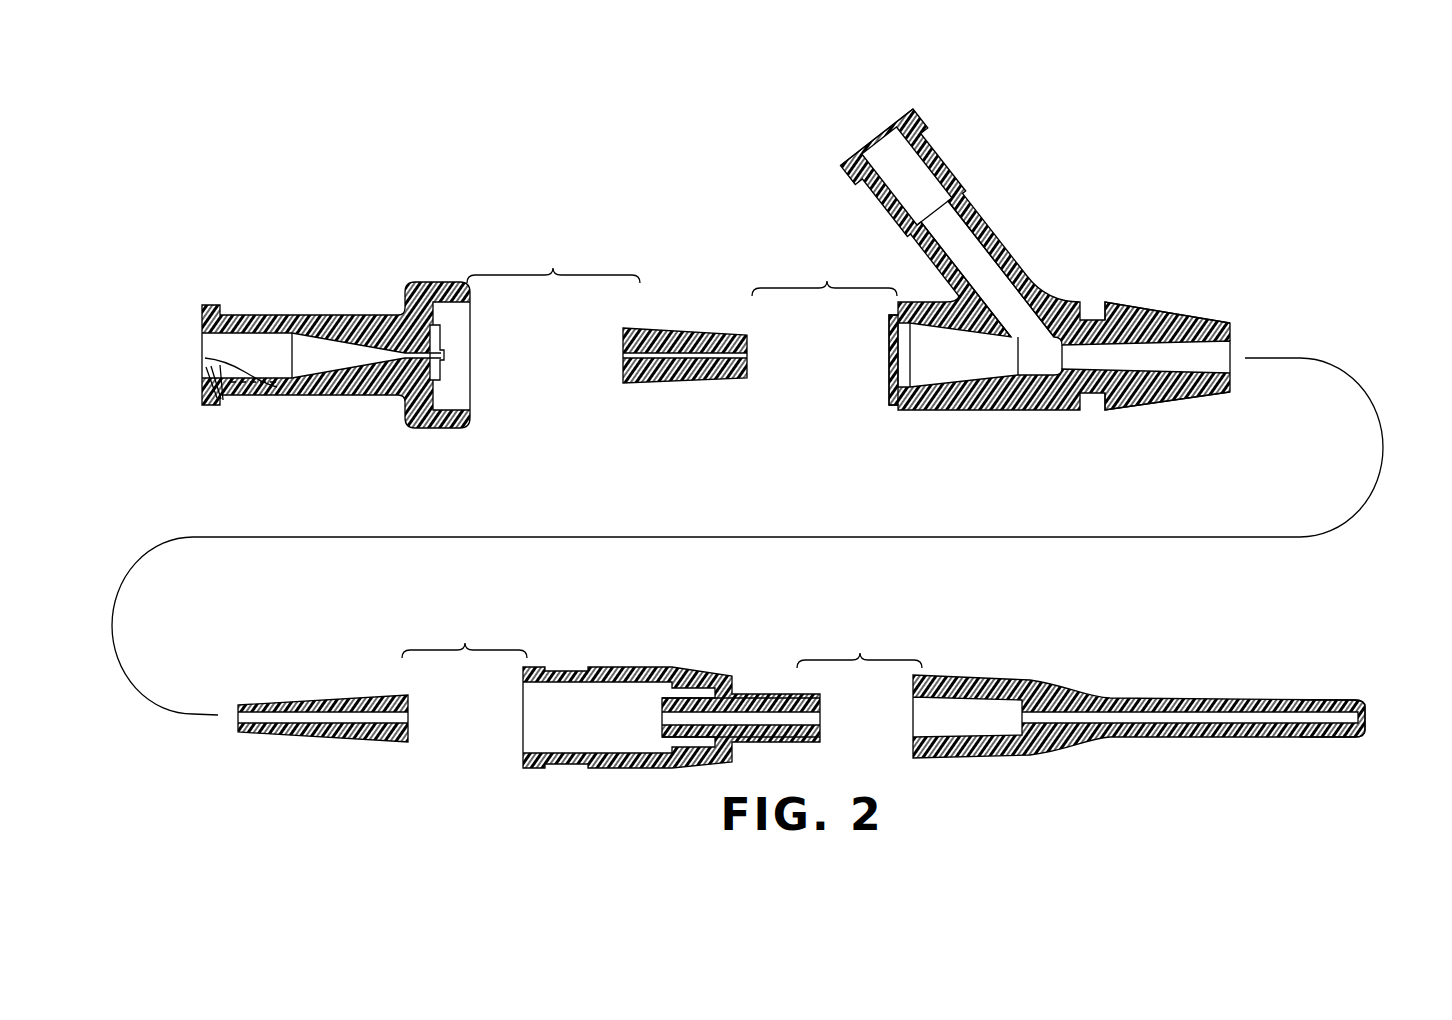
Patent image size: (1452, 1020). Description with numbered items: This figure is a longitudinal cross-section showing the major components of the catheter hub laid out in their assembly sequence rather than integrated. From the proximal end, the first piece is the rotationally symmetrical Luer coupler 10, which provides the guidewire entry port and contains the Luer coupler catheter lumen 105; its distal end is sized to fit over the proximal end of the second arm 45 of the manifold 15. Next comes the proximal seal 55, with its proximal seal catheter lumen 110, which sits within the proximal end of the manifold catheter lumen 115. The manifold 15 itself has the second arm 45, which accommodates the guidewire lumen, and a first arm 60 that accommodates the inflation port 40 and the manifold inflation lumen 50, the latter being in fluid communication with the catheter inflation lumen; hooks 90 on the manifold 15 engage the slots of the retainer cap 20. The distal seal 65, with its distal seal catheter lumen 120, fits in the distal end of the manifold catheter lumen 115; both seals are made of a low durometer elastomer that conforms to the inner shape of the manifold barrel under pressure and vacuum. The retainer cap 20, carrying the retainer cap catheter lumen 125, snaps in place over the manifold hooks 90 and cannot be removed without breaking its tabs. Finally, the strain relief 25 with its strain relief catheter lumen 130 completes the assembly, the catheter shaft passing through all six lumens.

The Luer coupler 10 is at (298, 314).
The Luer coupler catheter lumen 105 is at (202, 353).
The proximal seal 55 is at (642, 295).
The proximal seal catheter lumen 110 is at (626, 354).
The manifold 15 is at (1019, 272).
The inflation port 40 is at (882, 139).
The first arm 60 is at (946, 172).
The manifold inflation lumen 50 is at (968, 235).
The hooks 90 is at (1106, 303).
The second arm 45 is at (902, 405).
The manifold catheter lumen 115 is at (893, 354).
The distal seal 65 is at (360, 669).
The distal seal catheter lumen 120 is at (396, 715).
The retainer cap 20 is at (709, 666).
The retainer cap catheter lumen 125 is at (822, 716).
The strain relief 25 is at (1182, 665).
The strain relief catheter lumen 130 is at (1367, 716).